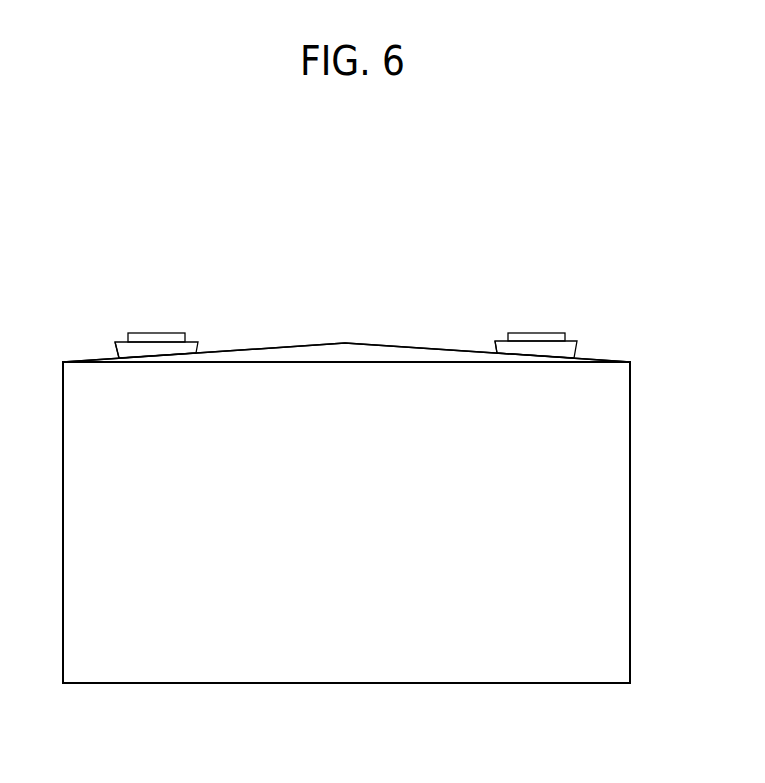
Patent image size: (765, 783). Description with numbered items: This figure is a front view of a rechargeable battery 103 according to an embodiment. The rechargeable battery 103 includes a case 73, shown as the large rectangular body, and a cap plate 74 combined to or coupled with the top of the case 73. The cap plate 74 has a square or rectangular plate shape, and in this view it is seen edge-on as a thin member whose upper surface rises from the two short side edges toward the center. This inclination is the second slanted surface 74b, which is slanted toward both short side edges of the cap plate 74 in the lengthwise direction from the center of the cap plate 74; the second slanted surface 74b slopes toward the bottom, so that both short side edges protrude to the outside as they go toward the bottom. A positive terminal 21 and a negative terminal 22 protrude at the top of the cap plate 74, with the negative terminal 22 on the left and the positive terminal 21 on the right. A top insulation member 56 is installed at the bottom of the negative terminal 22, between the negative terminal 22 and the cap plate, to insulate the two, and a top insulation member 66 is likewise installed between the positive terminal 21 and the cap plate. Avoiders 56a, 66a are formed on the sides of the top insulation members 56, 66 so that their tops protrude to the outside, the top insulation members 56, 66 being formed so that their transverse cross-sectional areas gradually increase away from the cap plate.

The rechargeable battery 103 is at (366, 208).
The case 73 is at (631, 501).
The cap plate 74 is at (348, 340).
The second slanted surface 74b is at (303, 345).
The top insulation member 56 is at (198, 346).
The avoider 56a is at (116, 342).
The negative terminal 22 is at (155, 333).
The top insulation member 66 is at (578, 340).
The avoider 66a is at (496, 350).
The positive terminal 21 is at (537, 333).